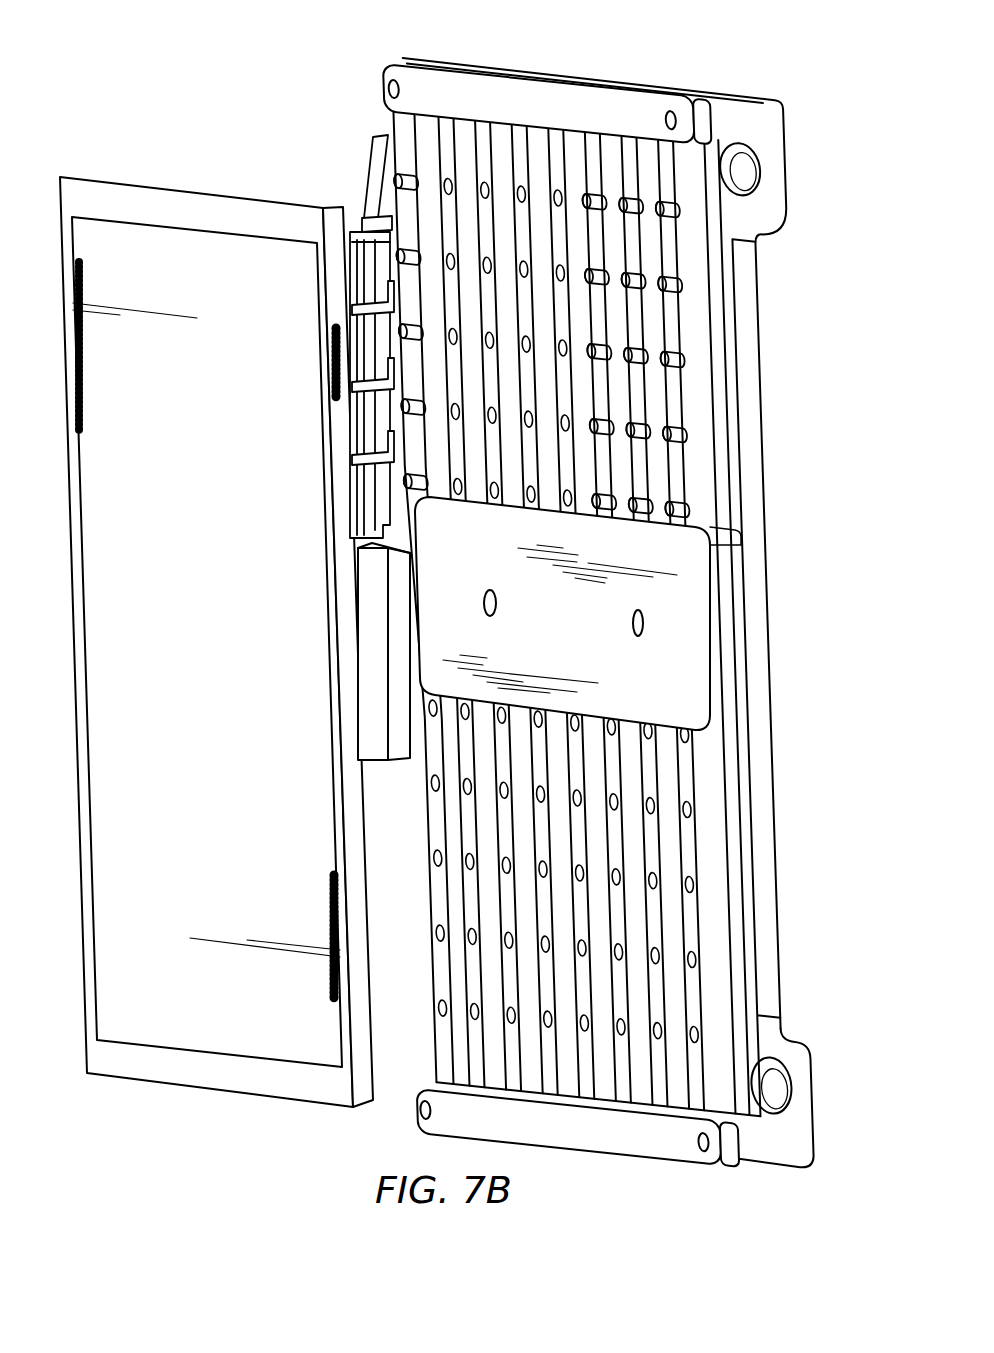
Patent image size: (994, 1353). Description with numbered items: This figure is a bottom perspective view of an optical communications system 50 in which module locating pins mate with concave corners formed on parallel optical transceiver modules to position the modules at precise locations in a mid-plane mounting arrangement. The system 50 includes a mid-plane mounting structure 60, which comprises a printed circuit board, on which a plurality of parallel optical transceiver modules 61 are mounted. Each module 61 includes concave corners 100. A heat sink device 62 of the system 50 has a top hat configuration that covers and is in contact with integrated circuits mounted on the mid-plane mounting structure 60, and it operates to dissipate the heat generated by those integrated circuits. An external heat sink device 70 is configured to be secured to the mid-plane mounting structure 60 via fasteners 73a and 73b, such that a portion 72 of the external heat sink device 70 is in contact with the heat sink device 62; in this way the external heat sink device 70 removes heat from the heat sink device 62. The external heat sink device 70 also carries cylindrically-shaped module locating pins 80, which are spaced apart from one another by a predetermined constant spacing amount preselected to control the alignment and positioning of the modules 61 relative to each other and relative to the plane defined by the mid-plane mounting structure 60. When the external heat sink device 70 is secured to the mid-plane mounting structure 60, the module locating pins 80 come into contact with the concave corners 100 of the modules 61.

The optical communications system 50 is at (202, 72).
The mid-plane mounting structure 60 is at (166, 185).
The parallel optical transceiver module 61 is at (356, 220).
The heat sink device 62 is at (398, 746).
The external heat sink device 70 is at (740, 314).
The portion of the external heat sink device 72 is at (688, 622).
The fastener 73a is at (585, 107).
The fastener 73b is at (652, 1148).
The module locating pin 80 is at (682, 432).
The concave corner 100 is at (365, 455).